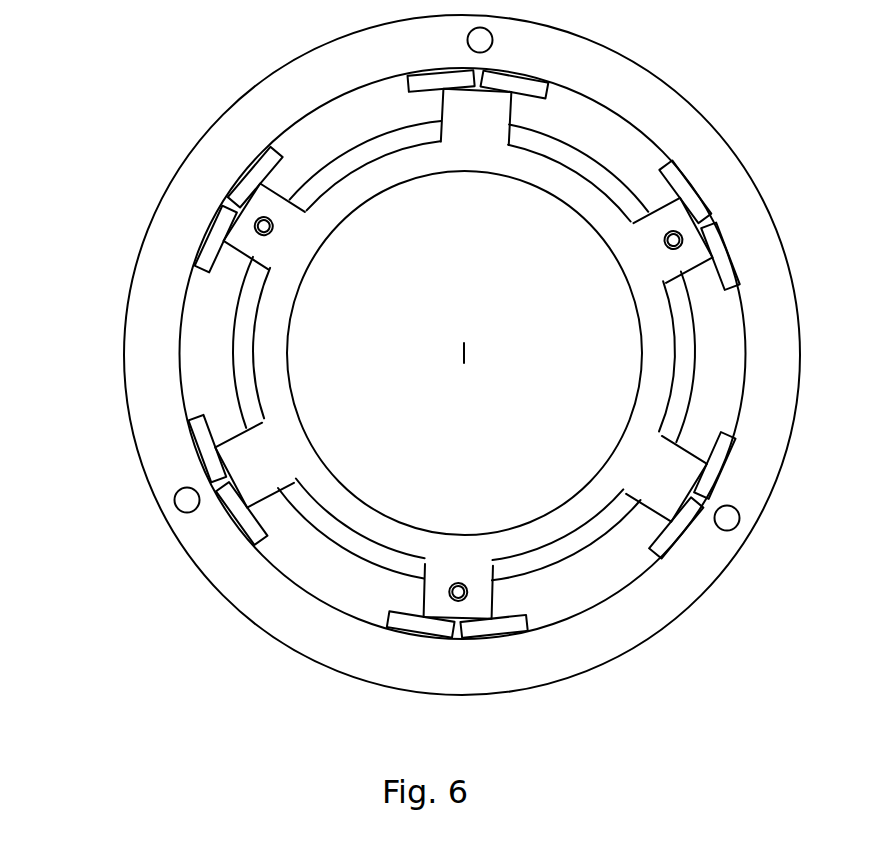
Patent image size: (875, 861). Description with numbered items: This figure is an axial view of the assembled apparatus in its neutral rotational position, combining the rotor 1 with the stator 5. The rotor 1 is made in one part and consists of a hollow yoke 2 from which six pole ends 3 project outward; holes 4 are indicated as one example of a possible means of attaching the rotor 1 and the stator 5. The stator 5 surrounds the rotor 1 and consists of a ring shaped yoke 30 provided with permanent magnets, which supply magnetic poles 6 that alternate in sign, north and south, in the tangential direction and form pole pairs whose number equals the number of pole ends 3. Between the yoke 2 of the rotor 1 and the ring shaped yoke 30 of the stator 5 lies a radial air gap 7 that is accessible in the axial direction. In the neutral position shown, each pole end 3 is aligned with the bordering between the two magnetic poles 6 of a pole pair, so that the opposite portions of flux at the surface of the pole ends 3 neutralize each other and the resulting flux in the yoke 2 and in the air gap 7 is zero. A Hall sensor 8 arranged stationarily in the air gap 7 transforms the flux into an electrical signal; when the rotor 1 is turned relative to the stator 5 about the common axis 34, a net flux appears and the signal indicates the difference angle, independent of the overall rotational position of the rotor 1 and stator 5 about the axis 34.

The rotor 1 is at (629, 357).
The yoke 2 is at (670, 395).
The pole ends 3 is at (527, 110).
The holes 4 is at (758, 515).
The stator 5 is at (704, 92).
The magnetic poles 6 is at (707, 192).
The air gap 7 is at (555, 565).
The Hall sensor 8 is at (874, 108).
The ring shaped yoke 30 is at (626, 665).
The axis 34 is at (456, 356).